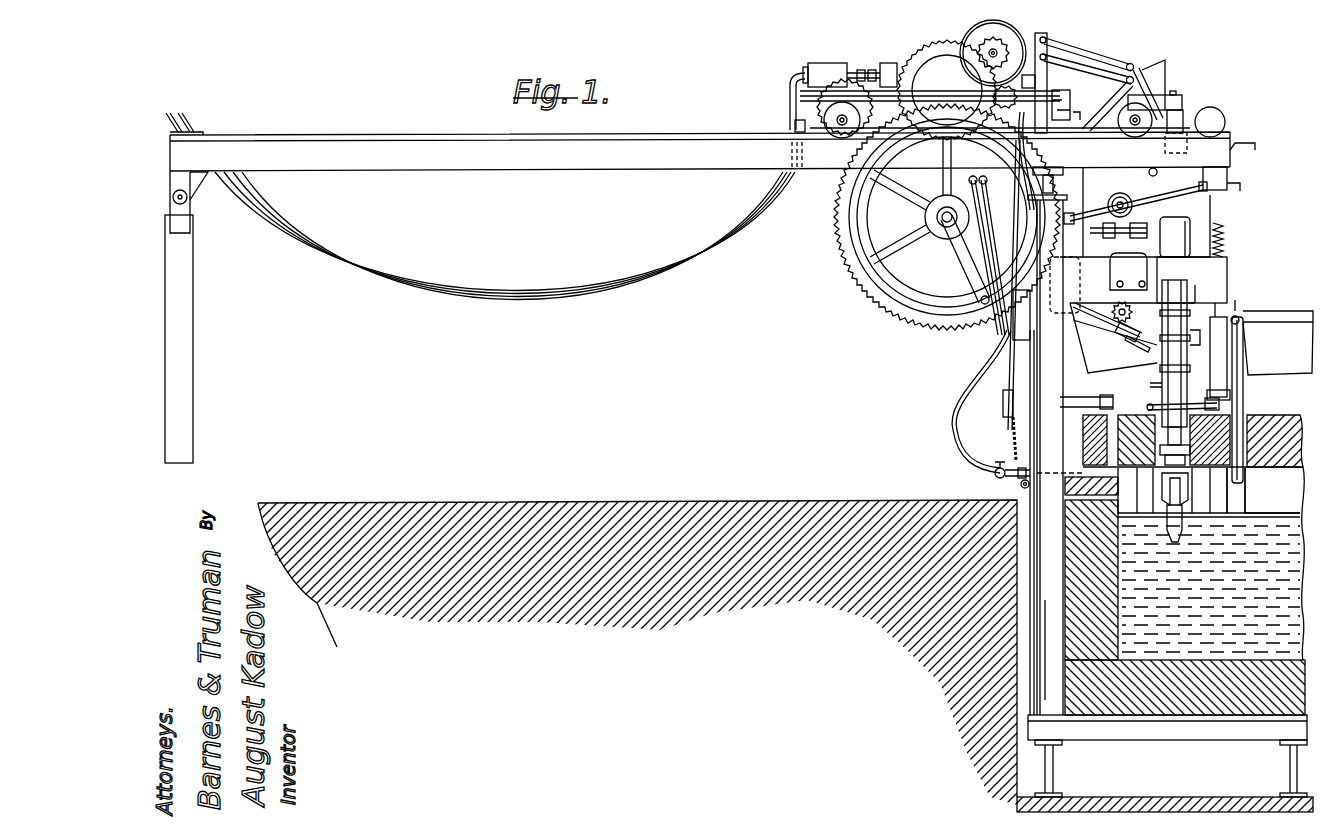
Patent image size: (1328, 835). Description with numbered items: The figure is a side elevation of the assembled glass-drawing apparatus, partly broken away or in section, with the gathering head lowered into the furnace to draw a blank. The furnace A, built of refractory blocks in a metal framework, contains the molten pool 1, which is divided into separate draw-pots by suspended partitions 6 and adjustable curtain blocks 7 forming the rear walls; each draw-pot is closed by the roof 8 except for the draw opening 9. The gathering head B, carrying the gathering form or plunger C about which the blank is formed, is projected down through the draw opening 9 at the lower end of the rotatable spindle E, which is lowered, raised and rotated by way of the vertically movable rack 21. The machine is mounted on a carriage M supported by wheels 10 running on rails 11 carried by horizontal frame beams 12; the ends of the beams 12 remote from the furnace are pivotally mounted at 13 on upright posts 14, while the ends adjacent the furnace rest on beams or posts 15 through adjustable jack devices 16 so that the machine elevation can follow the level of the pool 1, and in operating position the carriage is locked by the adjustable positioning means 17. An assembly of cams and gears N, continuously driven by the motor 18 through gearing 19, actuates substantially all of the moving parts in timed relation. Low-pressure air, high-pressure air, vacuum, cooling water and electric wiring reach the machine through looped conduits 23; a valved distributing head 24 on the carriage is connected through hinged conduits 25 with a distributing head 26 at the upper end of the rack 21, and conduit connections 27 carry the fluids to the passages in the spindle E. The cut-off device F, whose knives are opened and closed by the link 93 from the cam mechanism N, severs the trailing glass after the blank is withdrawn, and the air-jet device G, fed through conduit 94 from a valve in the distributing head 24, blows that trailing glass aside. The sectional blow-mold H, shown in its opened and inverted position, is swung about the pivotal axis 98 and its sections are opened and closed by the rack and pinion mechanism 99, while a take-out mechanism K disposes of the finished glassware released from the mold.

The molten pool 1 is at (1292, 520).
The suspended partitions 6 is at (1220, 487).
The adjustable curtain blocks 7 is at (1241, 416).
The roof 8 is at (1118, 411).
The draw opening 9 is at (1157, 460).
The wheels 10 is at (842, 128).
The rails 11 is at (691, 132).
The horizontal frame beams 12 is at (667, 167).
The pivotal mounting 13 is at (187, 197).
The upright posts 14 is at (187, 415).
The beams or posts 15 is at (1030, 451).
The adjustable jack devices 16 is at (1047, 177).
The adjustable positioning means 17 is at (1154, 100).
The motor 18 is at (968, 26).
The gearing 19 is at (938, 49).
The rack 21 is at (1150, 382).
The looped conduits 23 is at (540, 293).
The valved distributing head 24 is at (1058, 108).
The hinged conduits 25 is at (1098, 65).
The distributing head 26 is at (1186, 147).
The conduit connections 27 is at (1183, 204).
The link 93 is at (1073, 473).
The conduit 94 is at (947, 450).
The pivotal axis 98 is at (1130, 312).
The rack and pinion mechanism 99 is at (1136, 333).
The furnace A is at (1297, 467).
The gathering head B is at (1184, 493).
The gathering form or plunger C is at (1178, 543).
The rotatable spindle E is at (1181, 350).
The cut-off device F is at (1158, 405).
The air jet device G is at (1030, 482).
The blow-mold H is at (1079, 315).
The take-out mechanism K is at (1076, 401).
The carriage M is at (865, 78).
The assembly of cams and gears N is at (850, 238).